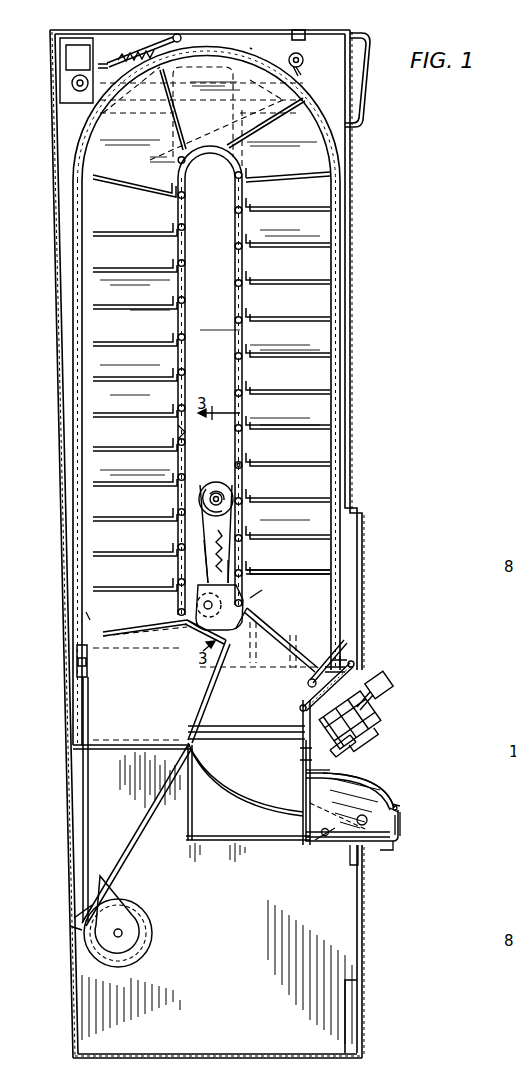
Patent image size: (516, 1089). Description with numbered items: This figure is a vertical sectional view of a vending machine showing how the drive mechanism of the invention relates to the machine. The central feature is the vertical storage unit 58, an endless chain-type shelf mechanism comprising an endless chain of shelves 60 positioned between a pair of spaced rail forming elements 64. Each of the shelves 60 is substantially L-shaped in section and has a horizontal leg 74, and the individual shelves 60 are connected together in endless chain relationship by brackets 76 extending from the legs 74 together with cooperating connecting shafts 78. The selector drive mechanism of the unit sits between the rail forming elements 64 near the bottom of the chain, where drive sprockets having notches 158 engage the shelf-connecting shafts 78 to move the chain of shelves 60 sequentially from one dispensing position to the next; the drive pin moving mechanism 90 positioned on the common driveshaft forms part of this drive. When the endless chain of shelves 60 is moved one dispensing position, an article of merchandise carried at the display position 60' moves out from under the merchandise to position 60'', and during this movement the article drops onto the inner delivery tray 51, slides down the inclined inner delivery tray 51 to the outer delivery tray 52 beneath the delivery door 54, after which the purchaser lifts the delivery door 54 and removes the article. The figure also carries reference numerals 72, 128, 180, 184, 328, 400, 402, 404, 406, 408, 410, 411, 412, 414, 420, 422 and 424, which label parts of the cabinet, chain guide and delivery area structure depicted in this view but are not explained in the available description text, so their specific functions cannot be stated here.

The inner delivery tray 51 is at (218, 820).
The outer delivery tray 52 is at (342, 846).
The delivery door 54 is at (375, 790).
The vertical storage unit 58 is at (173, 250).
The shelves 60 is at (211, 400).
The display position 60' is at (289, 640).
The dispensing position 60'' is at (185, 655).
The rail forming elements 64 is at (185, 433).
The lower shelf 72 is at (283, 568).
The horizontal leg 74 is at (253, 592).
The brackets 76 is at (238, 452).
The connecting shafts 78 is at (240, 468).
The drive pin moving mechanism 90 is at (190, 498).
The drive arm 128 is at (234, 530).
The notches 158 is at (515, 830).
The cabinet housing 180 is at (252, 48).
The guide rail 184 is at (88, 617).
The actuator block 328 is at (360, 733).
The dispensing mechanism 400 is at (413, 775).
The pivot pin 402 is at (328, 838).
The latch 404 is at (397, 808).
The housing bottom 406 is at (388, 841).
The latch pin 408 is at (400, 815).
The gate 410 is at (320, 770).
The ledge 411 is at (300, 748).
The link 412 is at (358, 752).
The stop 414 is at (305, 757).
The curved chute 420 is at (295, 822).
The linkage rod 422 is at (303, 705).
The vertical plate 424 is at (300, 737).